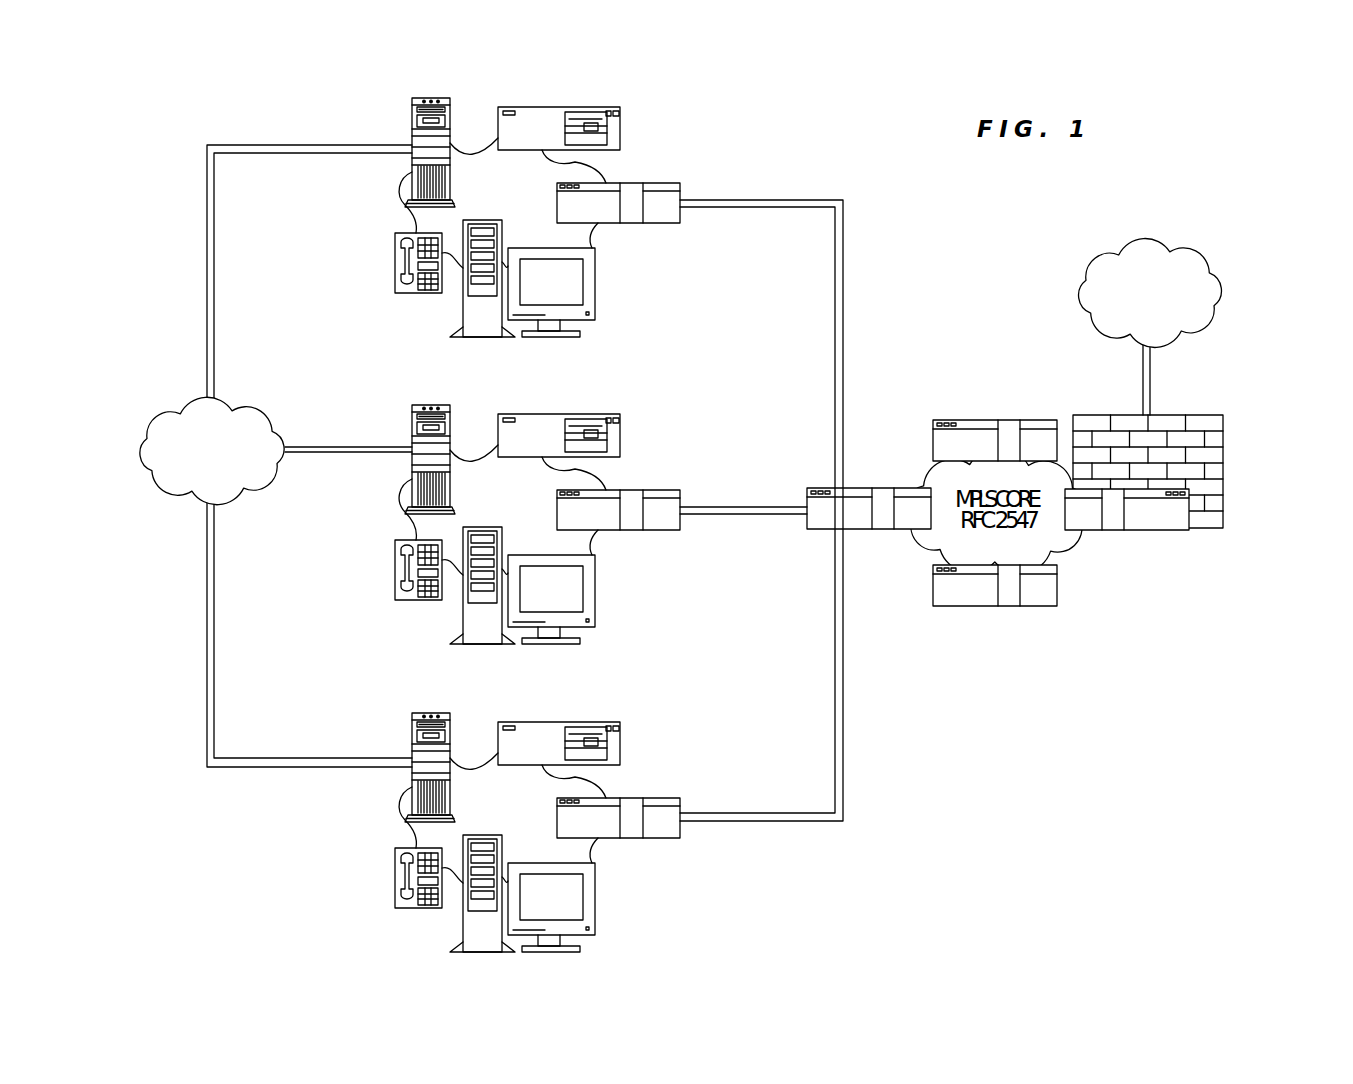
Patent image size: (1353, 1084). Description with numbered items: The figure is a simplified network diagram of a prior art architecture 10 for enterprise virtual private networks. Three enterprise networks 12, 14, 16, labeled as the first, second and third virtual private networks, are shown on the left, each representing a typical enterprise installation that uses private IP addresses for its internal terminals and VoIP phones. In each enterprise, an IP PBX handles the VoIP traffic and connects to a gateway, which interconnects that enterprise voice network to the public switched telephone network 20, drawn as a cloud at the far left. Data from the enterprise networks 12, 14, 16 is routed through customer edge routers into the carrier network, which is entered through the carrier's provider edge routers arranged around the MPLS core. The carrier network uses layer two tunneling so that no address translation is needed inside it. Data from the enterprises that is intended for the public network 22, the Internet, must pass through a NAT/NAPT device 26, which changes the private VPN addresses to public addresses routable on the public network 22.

The prior art architecture 10 is at (997, 226).
The enterprise network 12 is at (533, 821).
The enterprise network 14 is at (533, 513).
The enterprise network 16 is at (533, 206).
The public switched telephone network 20 is at (270, 411).
The public network 22 is at (1205, 258).
The NAT/NAPT device 26 is at (1223, 438).